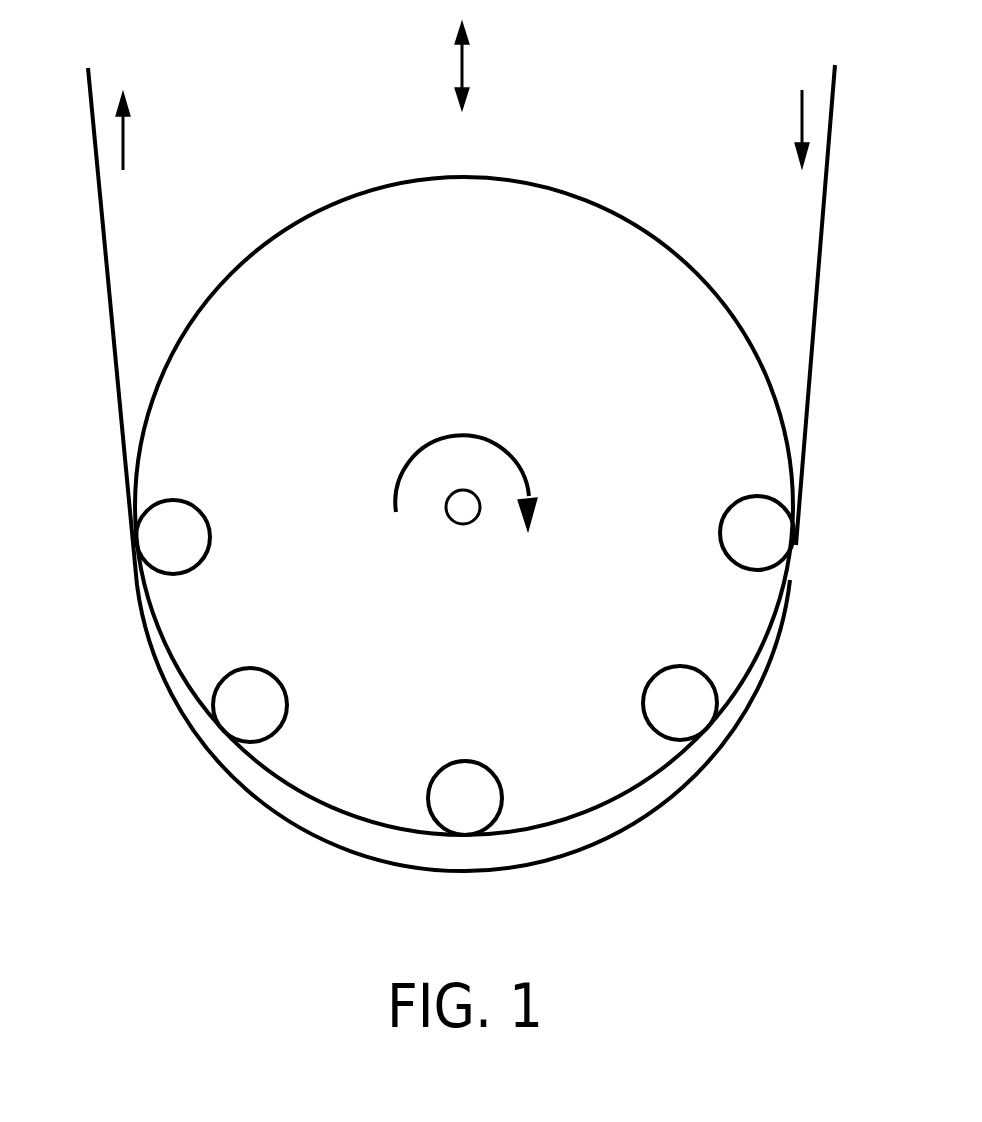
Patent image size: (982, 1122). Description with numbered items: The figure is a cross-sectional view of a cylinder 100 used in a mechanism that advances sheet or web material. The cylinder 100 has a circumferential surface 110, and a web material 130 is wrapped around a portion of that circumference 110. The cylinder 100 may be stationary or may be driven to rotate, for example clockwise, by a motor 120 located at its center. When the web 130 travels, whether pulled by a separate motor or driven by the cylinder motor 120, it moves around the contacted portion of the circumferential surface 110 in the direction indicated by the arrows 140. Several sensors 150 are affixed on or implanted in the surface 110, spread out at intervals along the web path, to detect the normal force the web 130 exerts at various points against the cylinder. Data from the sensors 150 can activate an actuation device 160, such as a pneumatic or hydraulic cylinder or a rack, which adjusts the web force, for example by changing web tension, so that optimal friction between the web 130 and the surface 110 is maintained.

The cylinder 100 is at (369, 377).
The circumferential surface 110 is at (597, 204).
The motor 120 is at (451, 519).
The web material 130 is at (113, 351).
The arrows 140 is at (462, 126).
The sensors 150 is at (442, 766).
The actuation device 160 is at (465, 63).